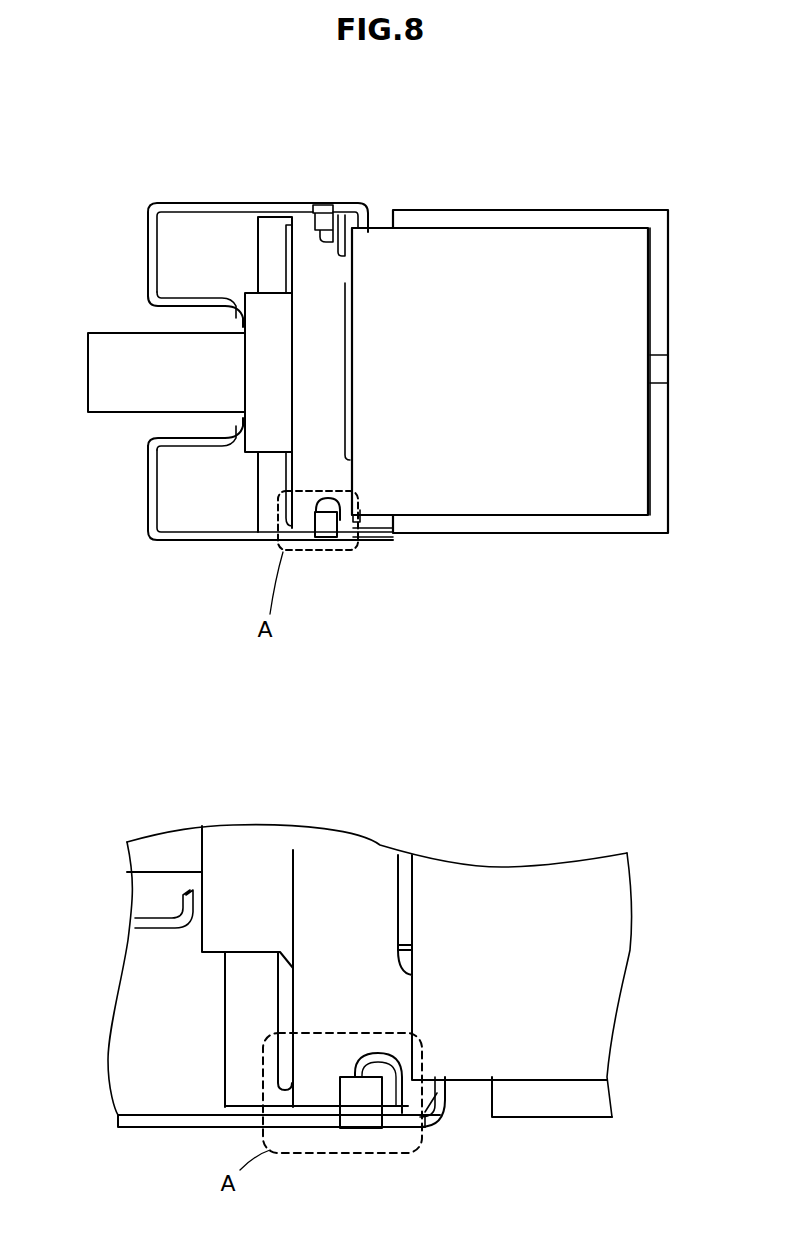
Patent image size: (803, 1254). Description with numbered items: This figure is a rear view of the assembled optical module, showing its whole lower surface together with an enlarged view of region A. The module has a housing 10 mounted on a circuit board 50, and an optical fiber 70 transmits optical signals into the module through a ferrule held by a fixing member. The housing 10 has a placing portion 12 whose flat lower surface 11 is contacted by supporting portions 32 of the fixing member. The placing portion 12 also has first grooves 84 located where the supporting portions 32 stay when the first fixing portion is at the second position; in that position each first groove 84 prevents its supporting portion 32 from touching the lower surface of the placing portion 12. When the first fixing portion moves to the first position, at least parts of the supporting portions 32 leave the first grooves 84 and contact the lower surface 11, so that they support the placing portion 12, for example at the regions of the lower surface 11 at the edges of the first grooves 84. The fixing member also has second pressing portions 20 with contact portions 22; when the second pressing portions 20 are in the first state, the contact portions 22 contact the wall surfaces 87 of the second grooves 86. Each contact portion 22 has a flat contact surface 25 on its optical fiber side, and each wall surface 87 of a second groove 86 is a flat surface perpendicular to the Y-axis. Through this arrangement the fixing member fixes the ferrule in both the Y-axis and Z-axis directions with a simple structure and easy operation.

The housing 10 is at (597, 215).
The flat lower surface 11 is at (305, 225).
The placing portion 12 is at (255, 393).
The second pressing portions 20 is at (208, 203).
The contact portions 22 is at (443, 1093).
The flat contact surface 25 is at (437, 1093).
The supporting portions 32 is at (322, 538).
The circuit board 50 is at (490, 235).
The optical fiber 70 is at (117, 340).
The first grooves 84 is at (352, 540).
The second grooves 86 is at (377, 520).
The wall surfaces 87 is at (447, 1088).